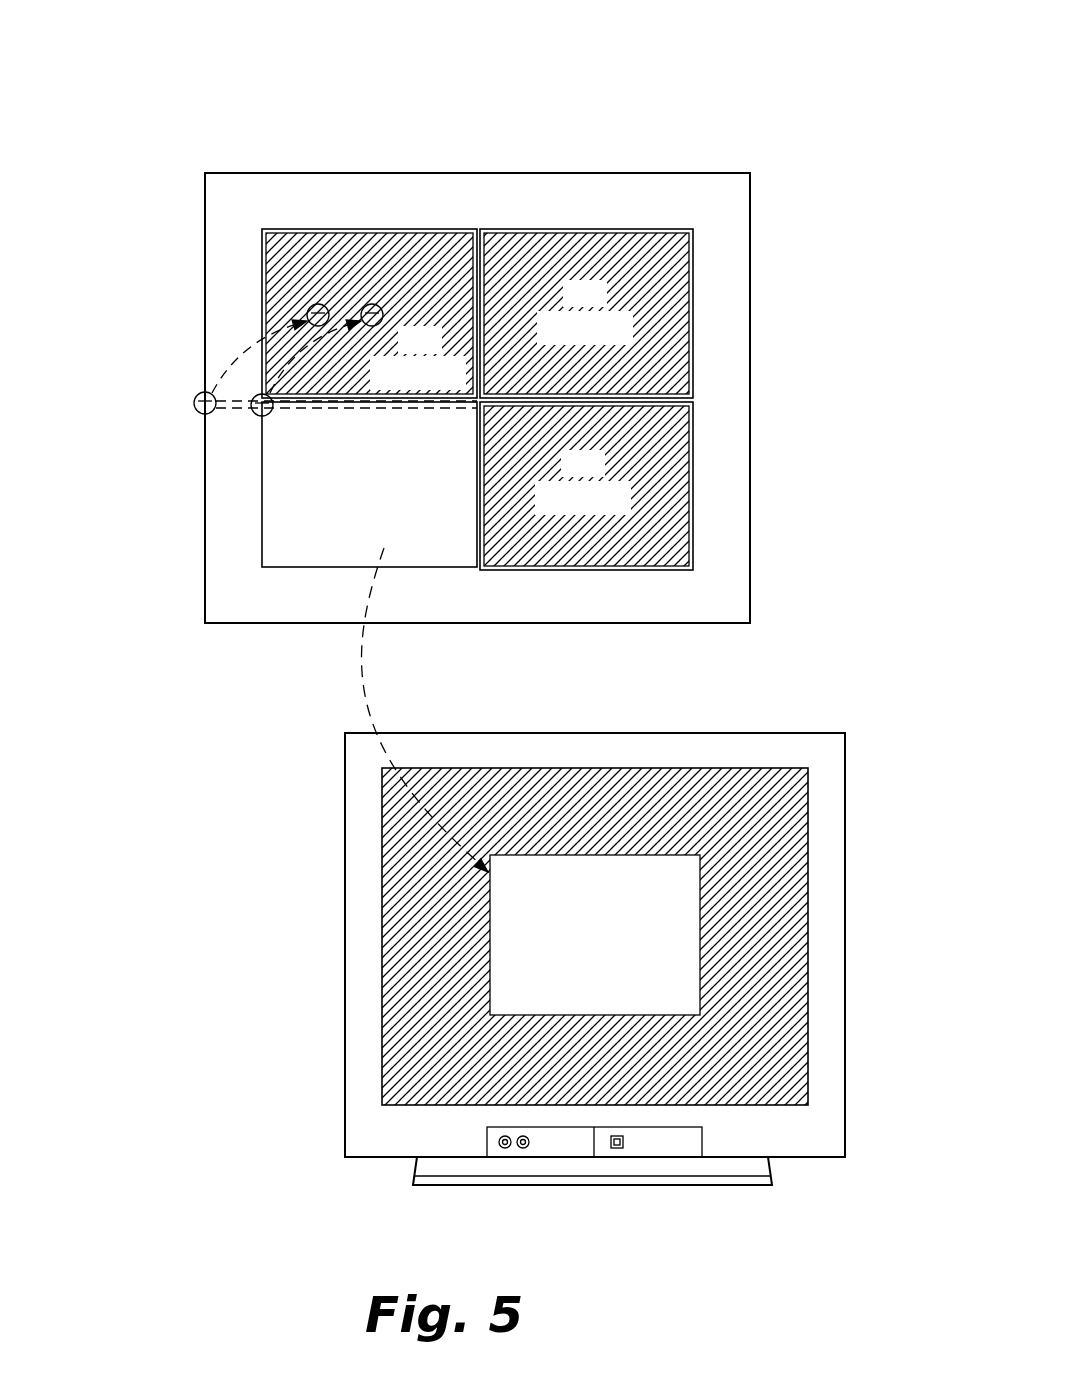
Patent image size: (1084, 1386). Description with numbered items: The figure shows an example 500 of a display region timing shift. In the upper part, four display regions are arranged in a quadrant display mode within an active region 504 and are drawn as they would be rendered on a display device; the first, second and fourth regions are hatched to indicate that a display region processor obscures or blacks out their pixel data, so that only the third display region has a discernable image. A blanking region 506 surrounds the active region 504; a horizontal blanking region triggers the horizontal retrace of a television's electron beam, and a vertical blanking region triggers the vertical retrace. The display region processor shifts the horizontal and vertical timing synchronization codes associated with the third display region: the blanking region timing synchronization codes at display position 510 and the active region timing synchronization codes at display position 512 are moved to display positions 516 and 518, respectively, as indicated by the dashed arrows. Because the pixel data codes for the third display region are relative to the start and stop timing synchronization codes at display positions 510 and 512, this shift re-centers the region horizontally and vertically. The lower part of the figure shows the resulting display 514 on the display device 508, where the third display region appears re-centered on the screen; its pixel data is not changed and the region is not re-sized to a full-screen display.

The example of a display region timing shift 500 is at (608, 62).
The active region 504 is at (534, 399).
The blanking region 506 is at (756, 259).
The display device 508 is at (621, 909).
The display position 510 is at (200, 415).
The display position 512 is at (258, 417).
The re-positioned display 514 is at (702, 760).
The display position 516 is at (313, 305).
The display position 518 is at (366, 304).